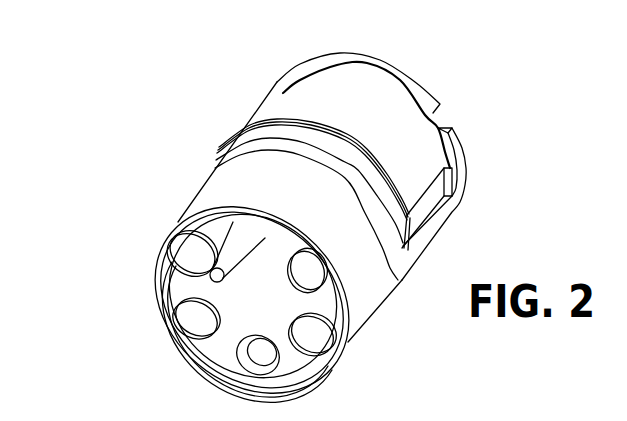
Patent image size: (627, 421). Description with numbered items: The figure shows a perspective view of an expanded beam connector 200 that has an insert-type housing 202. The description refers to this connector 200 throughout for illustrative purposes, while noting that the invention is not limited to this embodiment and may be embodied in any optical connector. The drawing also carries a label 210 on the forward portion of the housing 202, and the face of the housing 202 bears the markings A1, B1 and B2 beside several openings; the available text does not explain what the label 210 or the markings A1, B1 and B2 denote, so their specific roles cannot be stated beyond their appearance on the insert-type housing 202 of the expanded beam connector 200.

The expanded beam connector 200 is at (504, 150).
The front ring / shell 210 is at (223, 203).
The insert-type housing 202 is at (183, 287).
The contact cavity A1 is at (298, 270).
The contact cavity B1 is at (305, 334).
The contact cavity B2 is at (209, 318).